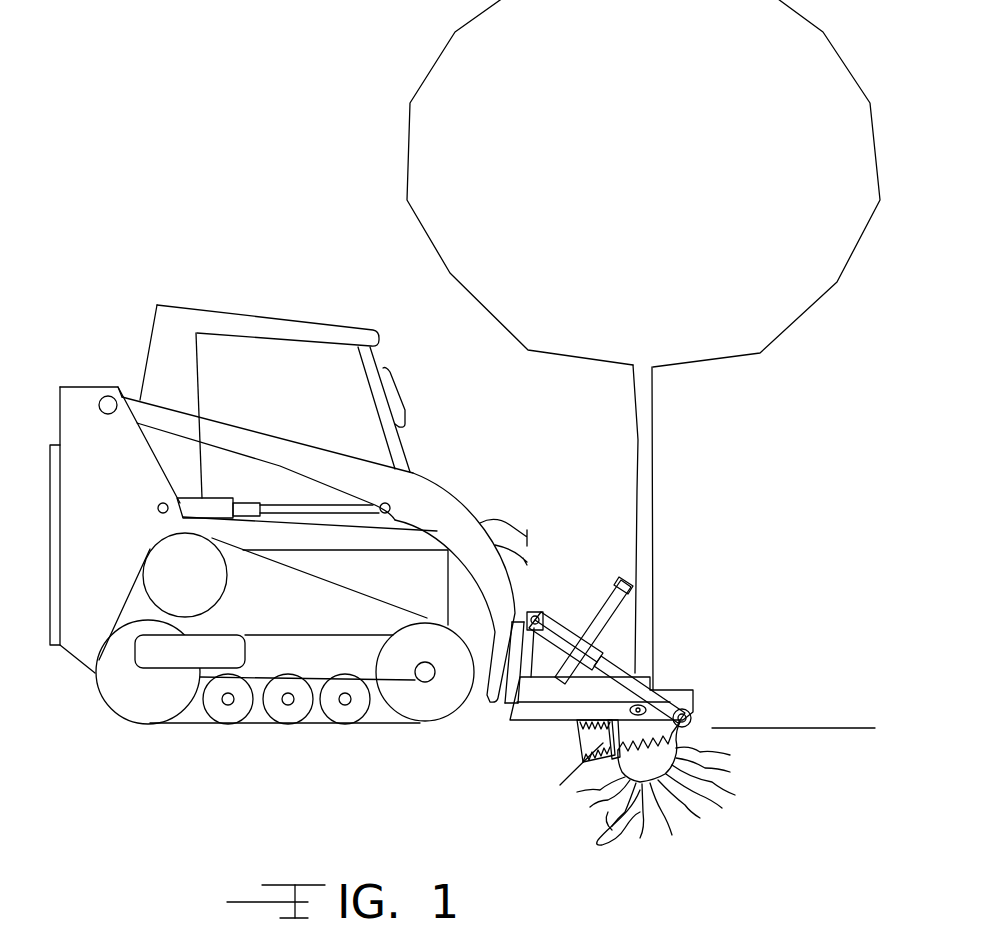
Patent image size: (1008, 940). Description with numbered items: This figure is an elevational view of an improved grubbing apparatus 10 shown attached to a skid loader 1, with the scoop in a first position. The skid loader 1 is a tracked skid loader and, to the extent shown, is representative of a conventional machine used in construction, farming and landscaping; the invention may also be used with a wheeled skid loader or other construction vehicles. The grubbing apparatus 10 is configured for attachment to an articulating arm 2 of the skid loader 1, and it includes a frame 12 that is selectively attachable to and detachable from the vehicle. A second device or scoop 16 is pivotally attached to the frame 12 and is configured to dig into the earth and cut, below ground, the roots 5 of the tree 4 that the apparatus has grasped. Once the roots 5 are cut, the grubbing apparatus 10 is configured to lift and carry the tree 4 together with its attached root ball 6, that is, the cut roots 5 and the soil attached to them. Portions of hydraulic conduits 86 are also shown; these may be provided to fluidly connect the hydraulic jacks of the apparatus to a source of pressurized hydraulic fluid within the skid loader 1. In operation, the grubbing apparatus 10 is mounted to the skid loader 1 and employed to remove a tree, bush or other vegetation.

The skid loader 1 is at (371, 496).
The articulating arm 2 is at (503, 597).
The tree 4 is at (643, 507).
The roots 5 is at (598, 843).
The root ball 6 is at (658, 760).
The grubbing apparatus 10 is at (575, 656).
The frame 12 is at (533, 710).
The scoop 16 is at (590, 737).
The hydraulic conduits 86 is at (505, 522).